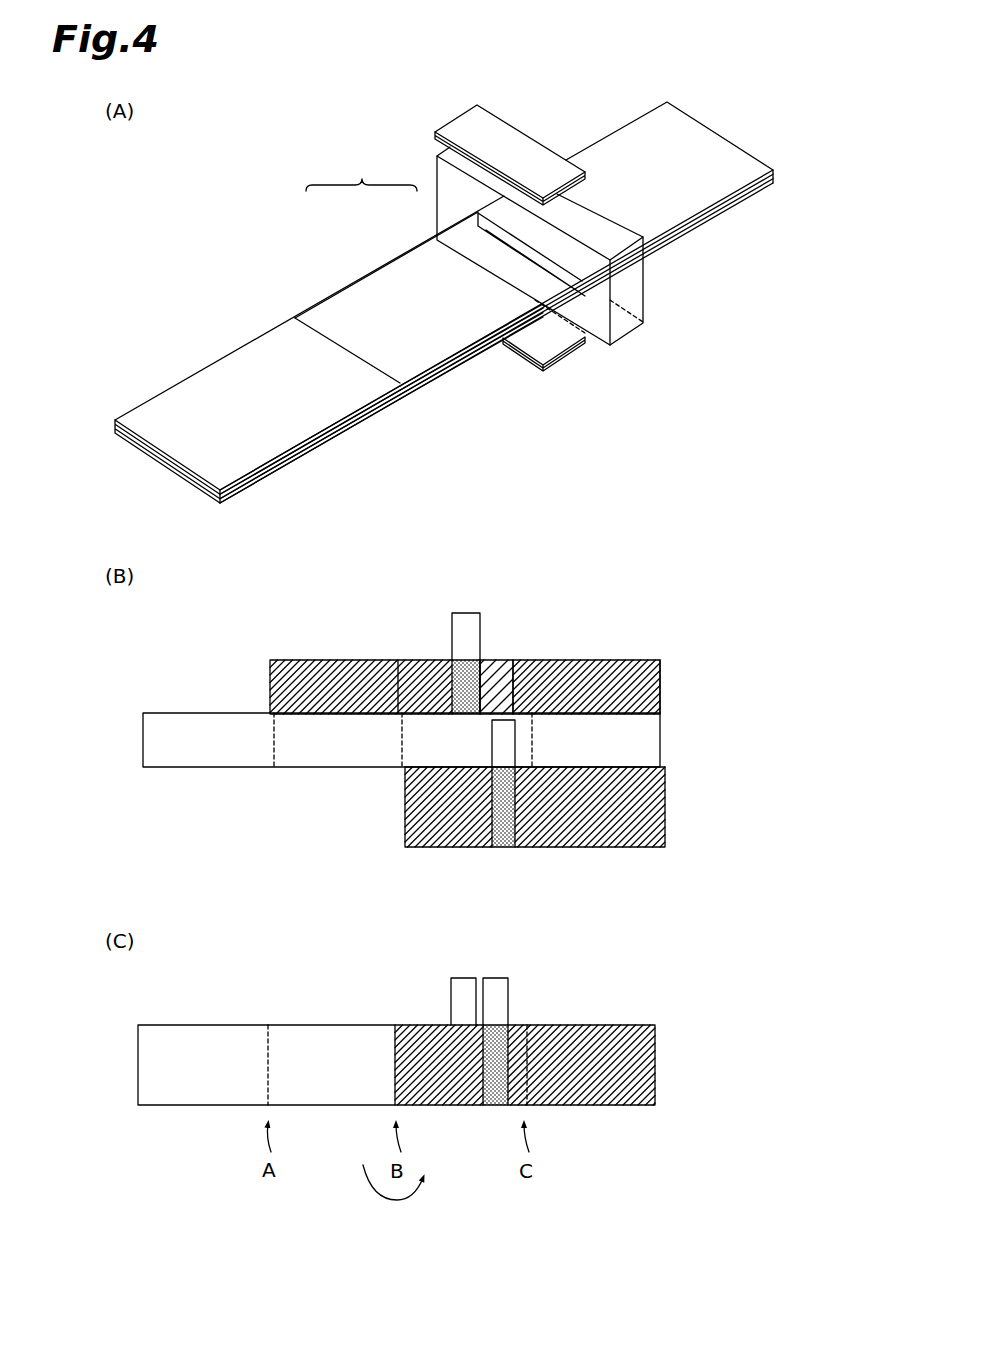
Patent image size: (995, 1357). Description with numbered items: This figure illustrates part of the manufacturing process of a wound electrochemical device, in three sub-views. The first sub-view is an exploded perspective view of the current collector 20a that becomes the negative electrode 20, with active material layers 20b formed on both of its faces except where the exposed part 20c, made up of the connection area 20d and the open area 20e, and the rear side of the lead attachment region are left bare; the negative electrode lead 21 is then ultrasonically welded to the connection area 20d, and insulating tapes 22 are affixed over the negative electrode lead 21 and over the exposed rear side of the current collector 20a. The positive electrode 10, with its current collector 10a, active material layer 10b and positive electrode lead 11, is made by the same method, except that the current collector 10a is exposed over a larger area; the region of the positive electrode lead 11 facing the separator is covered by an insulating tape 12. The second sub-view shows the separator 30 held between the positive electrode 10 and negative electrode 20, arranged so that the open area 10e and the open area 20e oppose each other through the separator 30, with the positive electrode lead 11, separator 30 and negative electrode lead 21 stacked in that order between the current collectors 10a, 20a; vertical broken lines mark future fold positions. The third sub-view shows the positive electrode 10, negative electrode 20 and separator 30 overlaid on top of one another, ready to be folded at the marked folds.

The positive electrode 10 is at (590, 660).
The current collector 10a is at (510, 668).
The active material layer 10b is at (662, 687).
The open area 10e is at (500, 668).
The positive electrode lead 11 is at (468, 608).
The insulating tape 12 is at (443, 670).
The negative electrode 20 is at (592, 850).
The current collector 20a is at (500, 344).
The active material layer 20b is at (340, 392).
The exposed part 20c is at (361, 172).
The connection area 20d is at (478, 246).
The open area 20e is at (382, 282).
The negative electrode lead 21 is at (617, 234).
The insulating tape 22 is at (518, 147).
The separator 30 is at (662, 737).